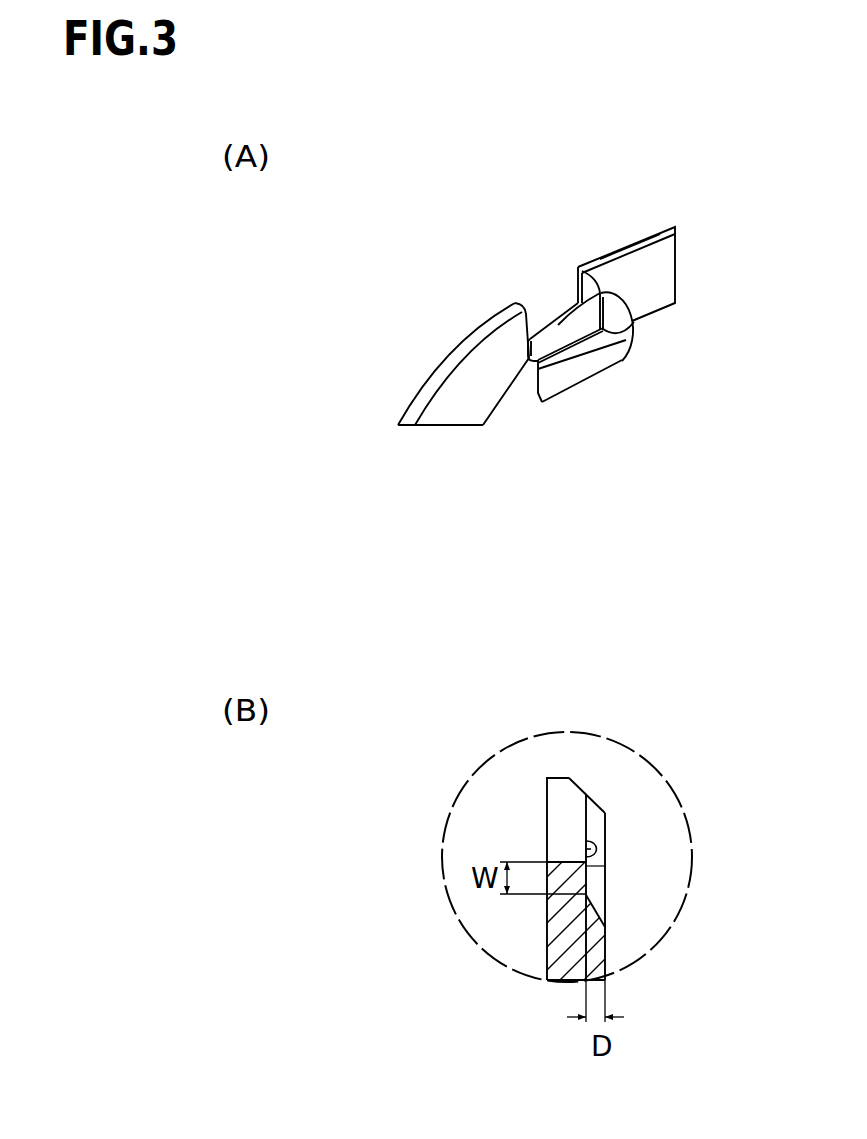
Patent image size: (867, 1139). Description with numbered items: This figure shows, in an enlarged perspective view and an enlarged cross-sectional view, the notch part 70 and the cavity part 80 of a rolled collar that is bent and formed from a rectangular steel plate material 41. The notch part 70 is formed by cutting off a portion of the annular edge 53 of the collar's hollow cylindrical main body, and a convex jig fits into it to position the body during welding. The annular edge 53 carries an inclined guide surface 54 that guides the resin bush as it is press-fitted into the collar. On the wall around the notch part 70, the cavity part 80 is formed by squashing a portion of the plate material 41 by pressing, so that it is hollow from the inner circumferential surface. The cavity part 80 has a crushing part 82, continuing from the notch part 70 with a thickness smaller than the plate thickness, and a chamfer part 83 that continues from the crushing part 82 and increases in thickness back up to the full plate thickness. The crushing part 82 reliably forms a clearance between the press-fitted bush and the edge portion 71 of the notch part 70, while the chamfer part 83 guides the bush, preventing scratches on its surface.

The plate material 41 is at (551, 983).
The annular edge 53 is at (633, 244).
The guide surface 54 is at (663, 257).
The notch part 70 is at (562, 338).
The edge portion 71 is at (590, 845).
The cavity part 80 is at (575, 357).
The crushing part 82 is at (600, 870).
The chamfer part 83 is at (607, 900).